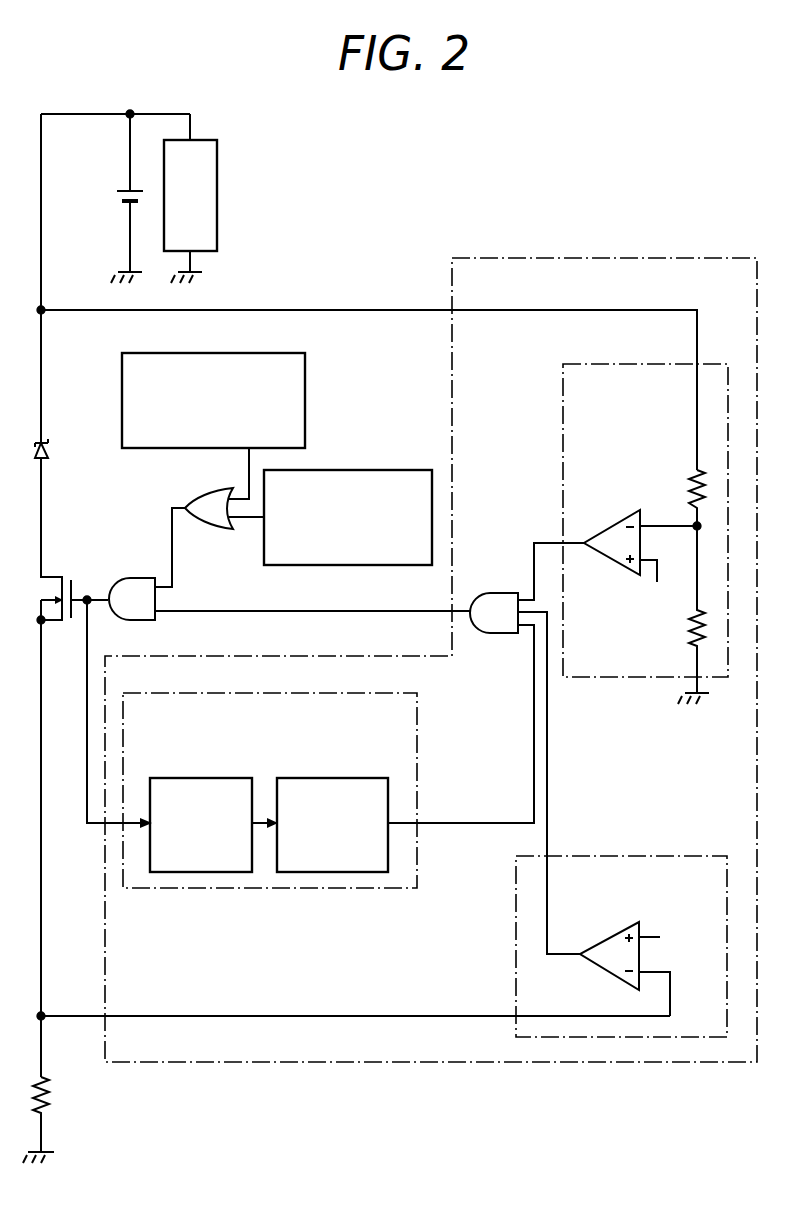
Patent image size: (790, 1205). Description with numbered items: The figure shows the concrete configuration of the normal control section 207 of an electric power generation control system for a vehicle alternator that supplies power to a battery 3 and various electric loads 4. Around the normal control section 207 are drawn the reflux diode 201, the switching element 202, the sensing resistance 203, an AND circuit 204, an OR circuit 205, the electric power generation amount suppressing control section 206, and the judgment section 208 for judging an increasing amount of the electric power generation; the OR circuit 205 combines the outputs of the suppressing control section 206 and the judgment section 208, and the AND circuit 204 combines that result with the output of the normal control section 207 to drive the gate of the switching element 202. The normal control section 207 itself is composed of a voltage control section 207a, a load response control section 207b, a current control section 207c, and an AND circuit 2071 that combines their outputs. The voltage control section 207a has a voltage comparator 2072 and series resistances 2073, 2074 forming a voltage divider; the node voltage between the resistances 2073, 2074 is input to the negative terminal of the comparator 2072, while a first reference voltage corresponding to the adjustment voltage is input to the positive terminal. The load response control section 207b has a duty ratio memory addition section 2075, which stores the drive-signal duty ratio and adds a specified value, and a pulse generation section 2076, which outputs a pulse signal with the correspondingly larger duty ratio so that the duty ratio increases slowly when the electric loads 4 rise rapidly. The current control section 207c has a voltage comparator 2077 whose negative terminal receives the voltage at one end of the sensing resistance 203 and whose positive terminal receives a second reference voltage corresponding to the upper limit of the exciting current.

The battery 3 is at (119, 191).
The electric loads 4 is at (204, 139).
The reflux diode 201 is at (46, 447).
The switching element 202 is at (54, 576).
The sensing resistance 203 is at (50, 1095).
The AND circuit 204 is at (140, 577).
The OR circuit 205 is at (195, 493).
The electric power generation amount suppressing control section 206 is at (305, 380).
The normal control section 207 is at (660, 258).
The voltage control section 207a is at (563, 386).
The load response control section 207b is at (417, 710).
The current control section 207c is at (660, 856).
The judgment section for judging an increasing amount of the electric power generati 208 is at (377, 470).
The AND circuit 2071 is at (505, 592).
The voltage comparator 2072 is at (610, 522).
The resistance 2073 is at (692, 471).
The resistance 2074 is at (691, 644).
The duty ratio memory addition section 2075 is at (224, 778).
The pulse generation section 2076 is at (359, 778).
The voltage comparator 2077 is at (606, 972).